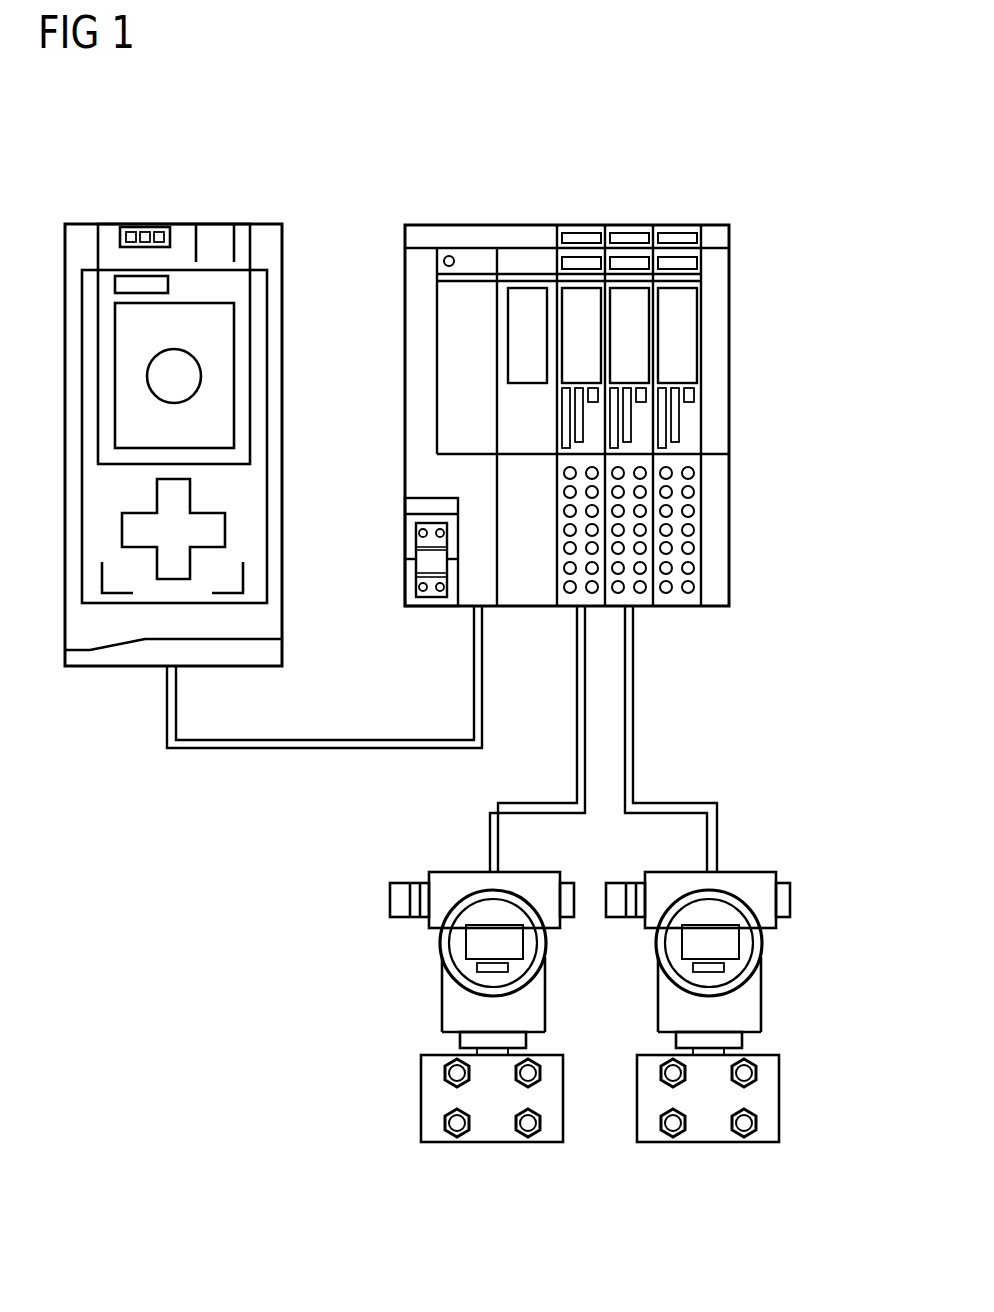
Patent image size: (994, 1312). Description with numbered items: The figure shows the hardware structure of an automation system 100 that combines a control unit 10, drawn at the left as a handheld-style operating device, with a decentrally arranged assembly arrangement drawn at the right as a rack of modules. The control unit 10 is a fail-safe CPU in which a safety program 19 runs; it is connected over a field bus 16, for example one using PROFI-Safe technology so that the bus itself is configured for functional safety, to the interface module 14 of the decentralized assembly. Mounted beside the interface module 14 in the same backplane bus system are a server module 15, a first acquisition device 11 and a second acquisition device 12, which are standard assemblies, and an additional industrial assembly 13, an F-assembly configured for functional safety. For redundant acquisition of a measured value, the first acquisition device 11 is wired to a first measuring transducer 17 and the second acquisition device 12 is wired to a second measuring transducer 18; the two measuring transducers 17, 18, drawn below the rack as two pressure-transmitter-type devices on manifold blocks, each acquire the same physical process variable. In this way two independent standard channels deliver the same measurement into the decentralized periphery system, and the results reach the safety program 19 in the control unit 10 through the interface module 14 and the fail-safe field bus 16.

The automation system 100 is at (748, 174).
The control unit 10 is at (175, 224).
The safety program 19 is at (147, 381).
The field bus 16 is at (316, 748).
The interface module 14 is at (467, 225).
The server module 15 is at (527, 225).
The first acquisition device 11 is at (581, 225).
The second acquisition device 12 is at (629, 225).
The additional industrial assembly 13 is at (678, 225).
The first measuring transducer 17 is at (487, 1142).
The second measuring transducer 18 is at (708, 1142).